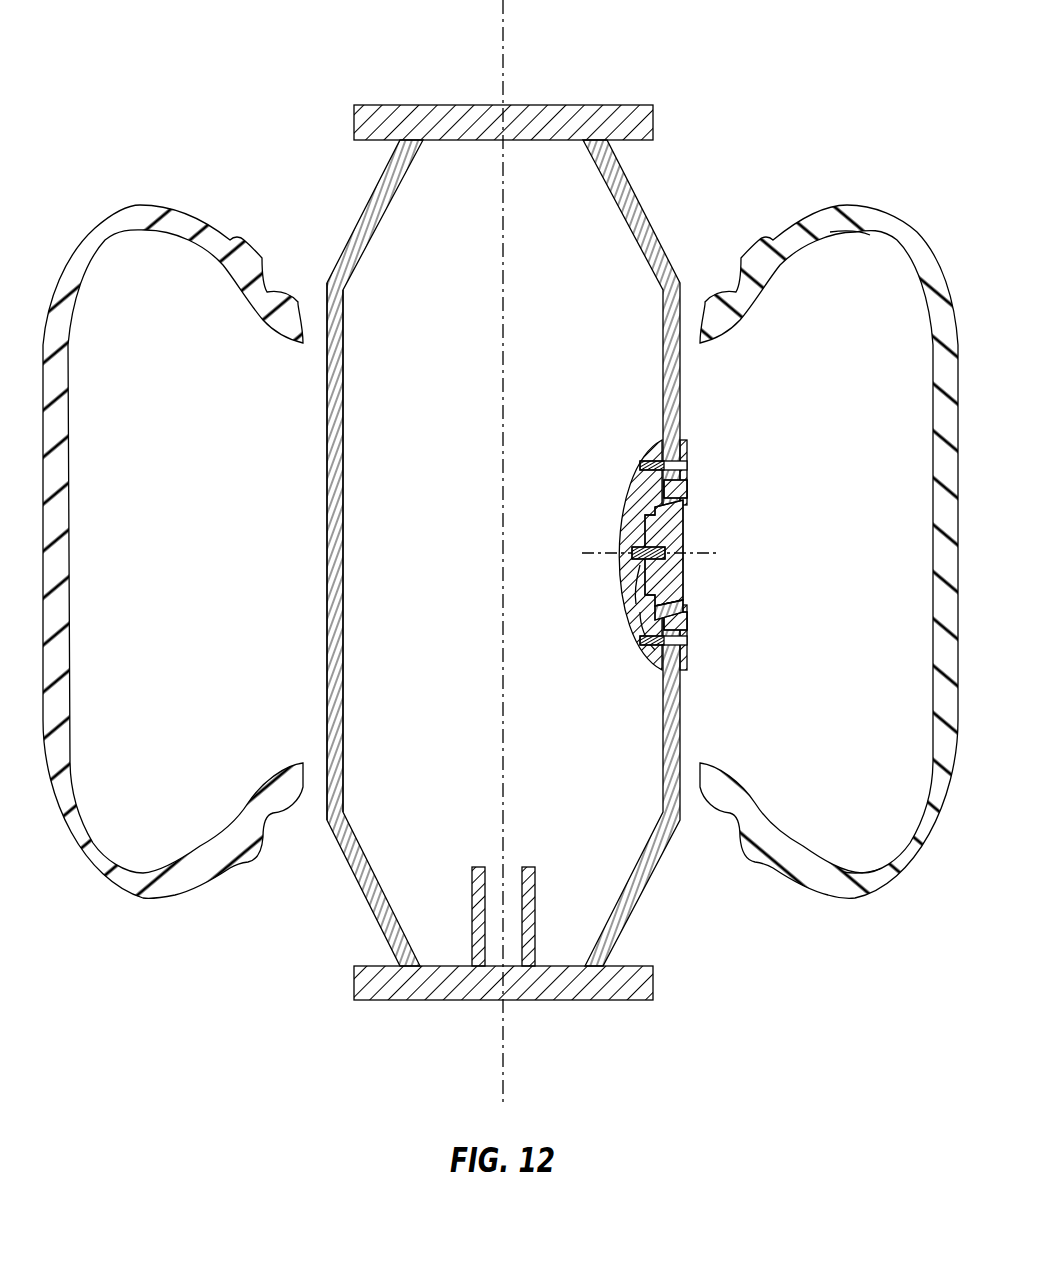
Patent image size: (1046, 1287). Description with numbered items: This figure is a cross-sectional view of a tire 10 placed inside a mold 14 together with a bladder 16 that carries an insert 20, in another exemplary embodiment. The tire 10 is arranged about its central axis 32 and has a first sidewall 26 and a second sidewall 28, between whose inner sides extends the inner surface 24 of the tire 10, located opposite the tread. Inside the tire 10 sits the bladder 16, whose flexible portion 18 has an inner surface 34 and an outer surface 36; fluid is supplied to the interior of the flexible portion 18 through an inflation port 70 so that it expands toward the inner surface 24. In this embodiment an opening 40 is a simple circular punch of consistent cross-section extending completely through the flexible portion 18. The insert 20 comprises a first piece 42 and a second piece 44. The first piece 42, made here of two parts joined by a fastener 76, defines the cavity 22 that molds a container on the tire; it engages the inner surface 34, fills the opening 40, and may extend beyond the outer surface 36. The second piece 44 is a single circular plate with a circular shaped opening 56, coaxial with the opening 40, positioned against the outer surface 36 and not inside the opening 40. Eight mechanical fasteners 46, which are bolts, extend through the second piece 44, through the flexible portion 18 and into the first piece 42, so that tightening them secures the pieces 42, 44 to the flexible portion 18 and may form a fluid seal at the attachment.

The tire 10 is at (500, 535).
The mold 14 is at (507, 552).
The bladder 16 is at (340, 553).
The flexible portion 18 is at (664, 355).
The insert 20 is at (657, 553).
The cavity 22 is at (684, 608).
The inner surface 24 is at (928, 441).
The first sidewall 26 is at (855, 234).
The second sidewall 28 is at (858, 870).
The axis 32 is at (504, 50).
The inner surface 34 is at (347, 542).
The outer surface 36 is at (324, 542).
The opening 40 is at (632, 572).
The first piece 42 is at (633, 620).
The second piece 44 is at (688, 656).
The mechanical fasteners 46 is at (655, 461).
The circular shaped opening 56 is at (684, 531).
The inflation port 70 is at (535, 897).
The fastener 76 is at (632, 551).